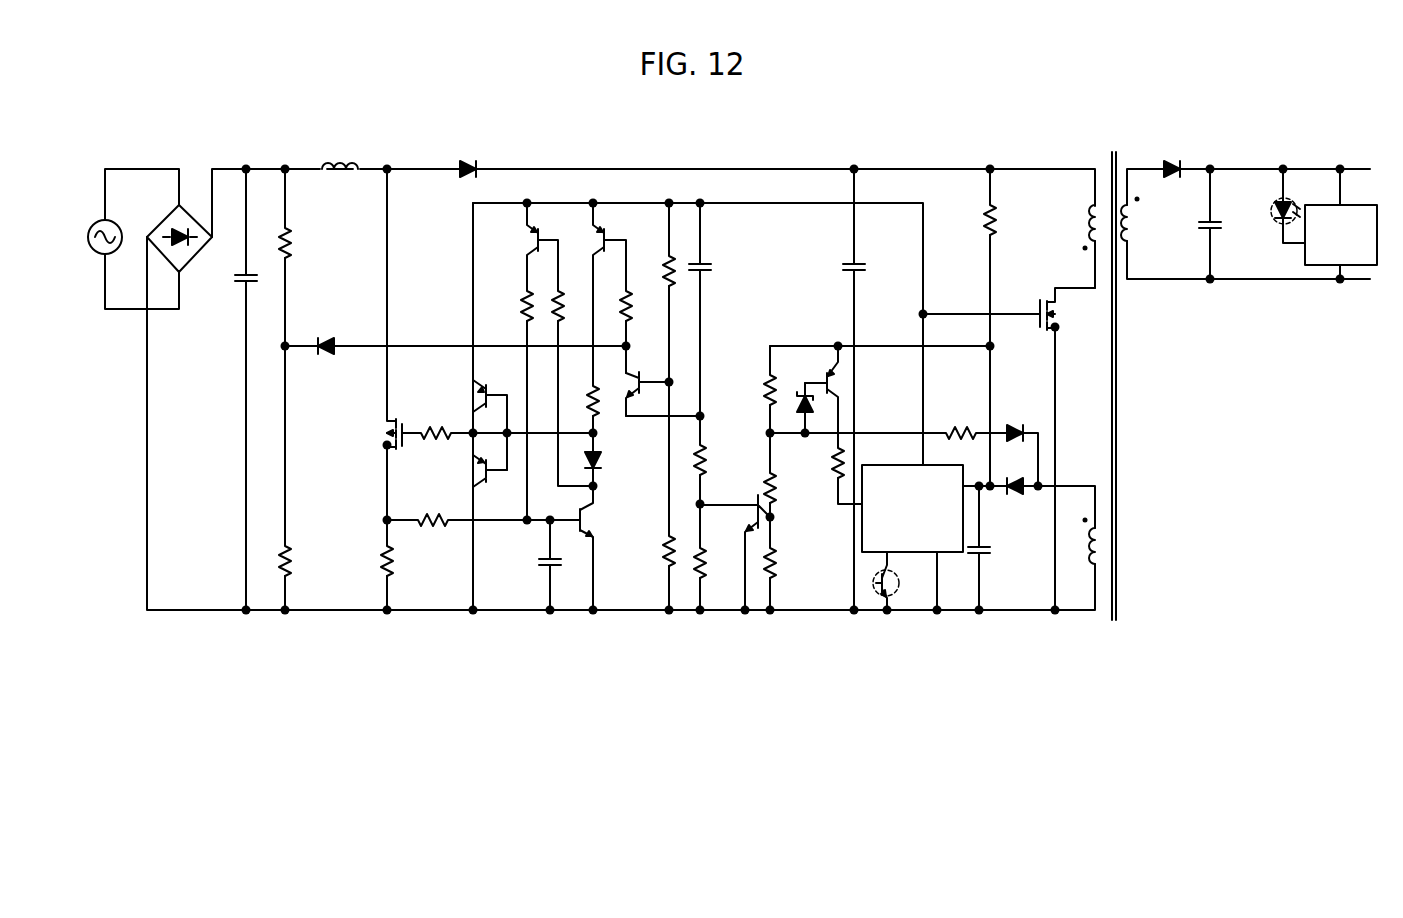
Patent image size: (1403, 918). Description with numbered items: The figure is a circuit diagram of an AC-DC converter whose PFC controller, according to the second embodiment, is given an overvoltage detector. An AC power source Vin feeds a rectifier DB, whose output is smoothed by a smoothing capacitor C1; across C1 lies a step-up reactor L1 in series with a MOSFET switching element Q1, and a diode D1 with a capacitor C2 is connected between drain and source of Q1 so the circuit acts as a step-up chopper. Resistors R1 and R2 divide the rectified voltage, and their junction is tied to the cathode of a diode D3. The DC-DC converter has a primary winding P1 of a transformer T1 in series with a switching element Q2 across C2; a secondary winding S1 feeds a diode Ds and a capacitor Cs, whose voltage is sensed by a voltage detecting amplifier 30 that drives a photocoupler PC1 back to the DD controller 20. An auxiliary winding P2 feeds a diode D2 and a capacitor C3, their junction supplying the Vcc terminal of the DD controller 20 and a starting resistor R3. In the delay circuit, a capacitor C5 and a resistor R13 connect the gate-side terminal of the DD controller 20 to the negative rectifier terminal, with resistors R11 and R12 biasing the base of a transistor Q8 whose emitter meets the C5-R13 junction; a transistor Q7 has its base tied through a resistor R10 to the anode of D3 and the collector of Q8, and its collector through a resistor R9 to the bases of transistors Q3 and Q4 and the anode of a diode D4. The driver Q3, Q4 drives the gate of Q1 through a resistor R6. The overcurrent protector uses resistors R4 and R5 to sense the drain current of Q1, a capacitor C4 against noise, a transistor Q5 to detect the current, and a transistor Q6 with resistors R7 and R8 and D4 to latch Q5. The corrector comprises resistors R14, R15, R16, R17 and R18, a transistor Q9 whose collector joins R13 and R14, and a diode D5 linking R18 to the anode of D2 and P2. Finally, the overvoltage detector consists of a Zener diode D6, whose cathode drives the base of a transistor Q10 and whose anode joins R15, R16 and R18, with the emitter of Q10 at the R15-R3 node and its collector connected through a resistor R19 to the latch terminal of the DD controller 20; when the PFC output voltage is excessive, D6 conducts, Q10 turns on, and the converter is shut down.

The DD controller 20 is at (926, 466).
The voltage detecting amplifier 30 is at (1325, 266).
The AC power source Vin is at (133, 239).
The rectifier DB is at (193, 256).
The smoothing capacitor C1 is at (233, 389).
The resistor R1 is at (302, 257).
The resistor R2 is at (302, 478).
The step-up reactor L1 is at (352, 152).
The diode D1 is at (471, 156).
The diode D3 is at (331, 332).
The switching element Q1 is at (385, 356).
The resistor R6 is at (445, 419).
The resistor R5 is at (433, 505).
The resistor R4 is at (404, 576).
The transistor Q3 is at (476, 406).
The transistor Q4 is at (476, 467).
The capacitor C4 is at (537, 565).
The transistor Q6 is at (526, 245).
The resistor R7 is at (513, 402).
The resistor R8 is at (575, 387).
The transistor Q7 is at (615, 293).
The resistor R10 is at (650, 330).
The resistor R11 is at (654, 368).
The resistor R12 is at (651, 566).
The capacitor C5 is at (716, 309).
The transistor Q8 is at (634, 387).
The resistor R9 is at (581, 417).
The diode D4 is at (612, 465).
The transistor Q5 is at (605, 548).
The capacitor C2 is at (840, 389).
The resistor R3 is at (975, 327).
The Vcc voltage terminal Vcc is at (992, 350).
The resistor R13 is at (725, 460).
The resistor R14 is at (725, 557).
The transistor Q9 is at (735, 546).
The resistor R15 is at (749, 389).
The resistor R16 is at (795, 489).
The resistor R17 is at (797, 577).
The Zener diode D6 is at (793, 409).
The transistor Q10 is at (818, 395).
The resistor R19 is at (828, 474).
The resistor R18 is at (966, 420).
The diode D5 is at (1024, 420).
The diode D2 is at (1021, 501).
The capacitor C3 is at (997, 548).
The photocoupler PC1 is at (1305, 206).
The switching element Q2 is at (1059, 440).
The primary winding P1 is at (1076, 246).
The auxiliary winding P2 is at (1076, 541).
The transformer T1 is at (1114, 372).
The secondary winding S1 is at (1245, 224).
The diode Ds is at (1265, 155).
The capacitor Cs is at (1226, 224).